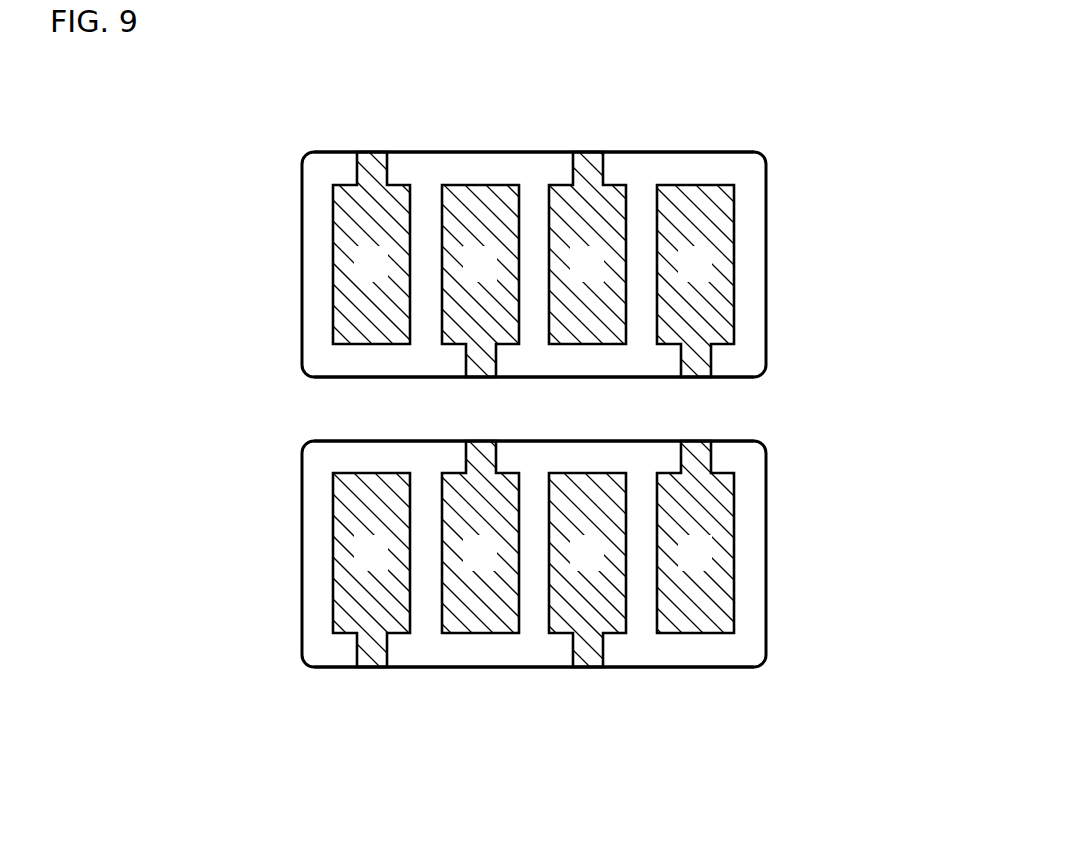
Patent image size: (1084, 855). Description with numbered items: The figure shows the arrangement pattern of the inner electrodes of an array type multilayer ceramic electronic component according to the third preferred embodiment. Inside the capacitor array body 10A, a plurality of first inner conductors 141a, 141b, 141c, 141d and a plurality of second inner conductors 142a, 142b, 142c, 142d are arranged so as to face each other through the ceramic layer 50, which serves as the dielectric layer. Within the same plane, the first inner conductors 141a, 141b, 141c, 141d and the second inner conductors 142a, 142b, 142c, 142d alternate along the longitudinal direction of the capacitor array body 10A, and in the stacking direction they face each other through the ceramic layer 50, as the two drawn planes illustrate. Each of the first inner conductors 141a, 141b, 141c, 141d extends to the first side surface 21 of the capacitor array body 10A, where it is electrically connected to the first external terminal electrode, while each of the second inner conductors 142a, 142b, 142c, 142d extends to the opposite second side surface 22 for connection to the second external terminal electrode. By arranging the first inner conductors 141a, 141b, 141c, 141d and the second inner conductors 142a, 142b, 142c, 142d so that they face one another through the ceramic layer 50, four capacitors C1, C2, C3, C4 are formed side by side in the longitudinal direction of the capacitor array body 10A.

The capacitor array body 10A is at (785, 181).
The ceramic layer 50 is at (766, 263).
The first side surface 21 is at (414, 151).
The second side surface 22 is at (508, 378).
The first inner conductor 141a is at (345, 250).
The first inner conductor 141b is at (480, 635).
The first inner conductor 141c is at (572, 172).
The first inner conductor 141d is at (697, 635).
The second inner conductor 142a is at (355, 650).
The second inner conductor 142b is at (481, 184).
The second inner conductor 142c is at (572, 650).
The second inner conductor 142d is at (705, 184).
The capacitor C1 is at (370, 352).
The capacitor C2 is at (455, 352).
The capacitor C3 is at (590, 352).
The capacitor C4 is at (670, 352).